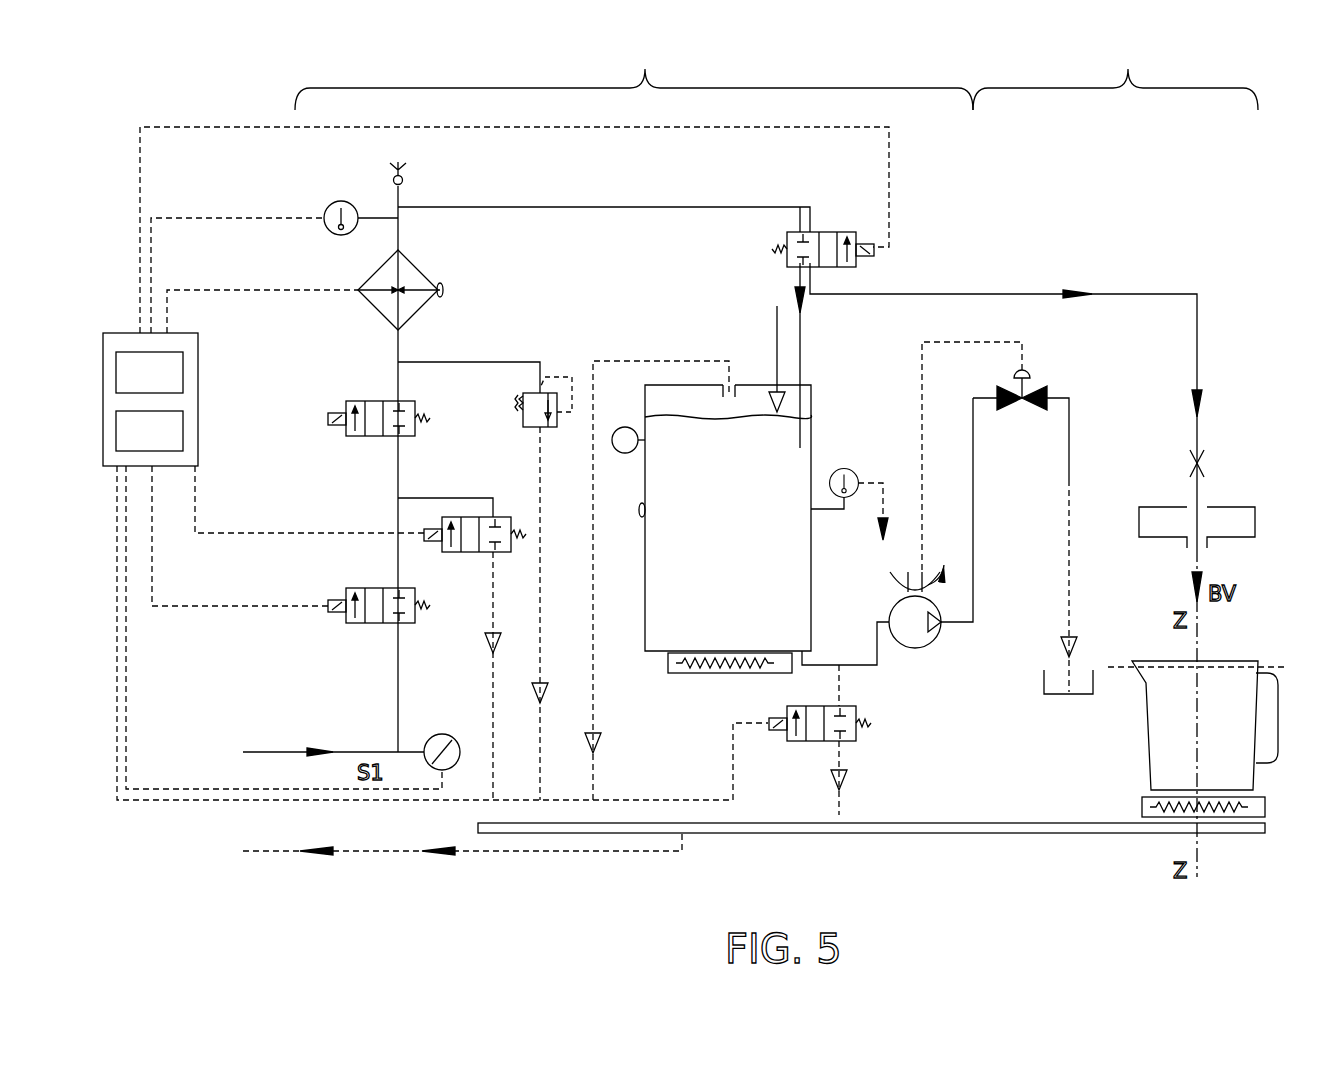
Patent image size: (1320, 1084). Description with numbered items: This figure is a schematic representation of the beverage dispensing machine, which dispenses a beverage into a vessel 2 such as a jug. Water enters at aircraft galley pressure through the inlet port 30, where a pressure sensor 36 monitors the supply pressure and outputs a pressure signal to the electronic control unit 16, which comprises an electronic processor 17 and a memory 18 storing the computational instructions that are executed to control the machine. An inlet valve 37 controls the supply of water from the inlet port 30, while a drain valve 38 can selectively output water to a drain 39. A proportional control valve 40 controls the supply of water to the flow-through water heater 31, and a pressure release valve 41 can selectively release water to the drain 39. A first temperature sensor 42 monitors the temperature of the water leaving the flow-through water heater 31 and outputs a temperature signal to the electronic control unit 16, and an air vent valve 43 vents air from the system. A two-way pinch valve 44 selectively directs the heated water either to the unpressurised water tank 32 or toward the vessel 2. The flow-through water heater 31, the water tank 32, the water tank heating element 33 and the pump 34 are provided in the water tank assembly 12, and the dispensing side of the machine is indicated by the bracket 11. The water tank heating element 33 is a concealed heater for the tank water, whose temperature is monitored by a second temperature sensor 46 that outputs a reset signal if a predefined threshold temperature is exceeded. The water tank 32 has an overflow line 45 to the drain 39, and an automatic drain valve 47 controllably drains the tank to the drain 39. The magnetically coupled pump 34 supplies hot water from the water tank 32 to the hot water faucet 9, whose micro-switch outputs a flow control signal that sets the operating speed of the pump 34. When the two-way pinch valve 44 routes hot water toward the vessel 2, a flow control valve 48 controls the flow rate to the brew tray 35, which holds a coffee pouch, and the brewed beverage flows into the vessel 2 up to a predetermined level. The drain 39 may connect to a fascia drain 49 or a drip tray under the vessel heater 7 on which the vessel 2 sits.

The vessel 2 is at (1152, 648).
The vessel heater 7 is at (1138, 797).
The hot water faucet 9 is at (1042, 375).
The dispensing section 11 is at (1115, 78).
The water tank assembly 12 is at (634, 78).
The electronic control unit 16 is at (496, 463).
The electronic processor 17 is at (156, 385).
The memory 18 is at (156, 443).
The inlet port 30 is at (312, 740).
The flow-through water heater 31 is at (432, 264).
The water tank 32 is at (724, 566).
The water tank heating element 33 is at (673, 676).
The pump 34 is at (892, 598).
The brew tray 35 is at (1222, 500).
The pressure sensor 36 is at (453, 732).
The inlet valve 37 is at (355, 586).
The drain valve 38 is at (470, 556).
The drain 39 is at (295, 845).
The proportional control valve 40 is at (365, 398).
The pressure release valve 41 is at (521, 416).
The first temperature sensor 42 is at (322, 205).
The air vent valve 43 is at (390, 178).
The two-way pinch valve 44 is at (783, 263).
The overflow line 45 is at (636, 355).
The second temperature sensor 46 is at (858, 466).
The automatic drain valve 47 is at (866, 745).
The flow control valve 48 is at (1205, 446).
The fascia drain 49 is at (970, 822).